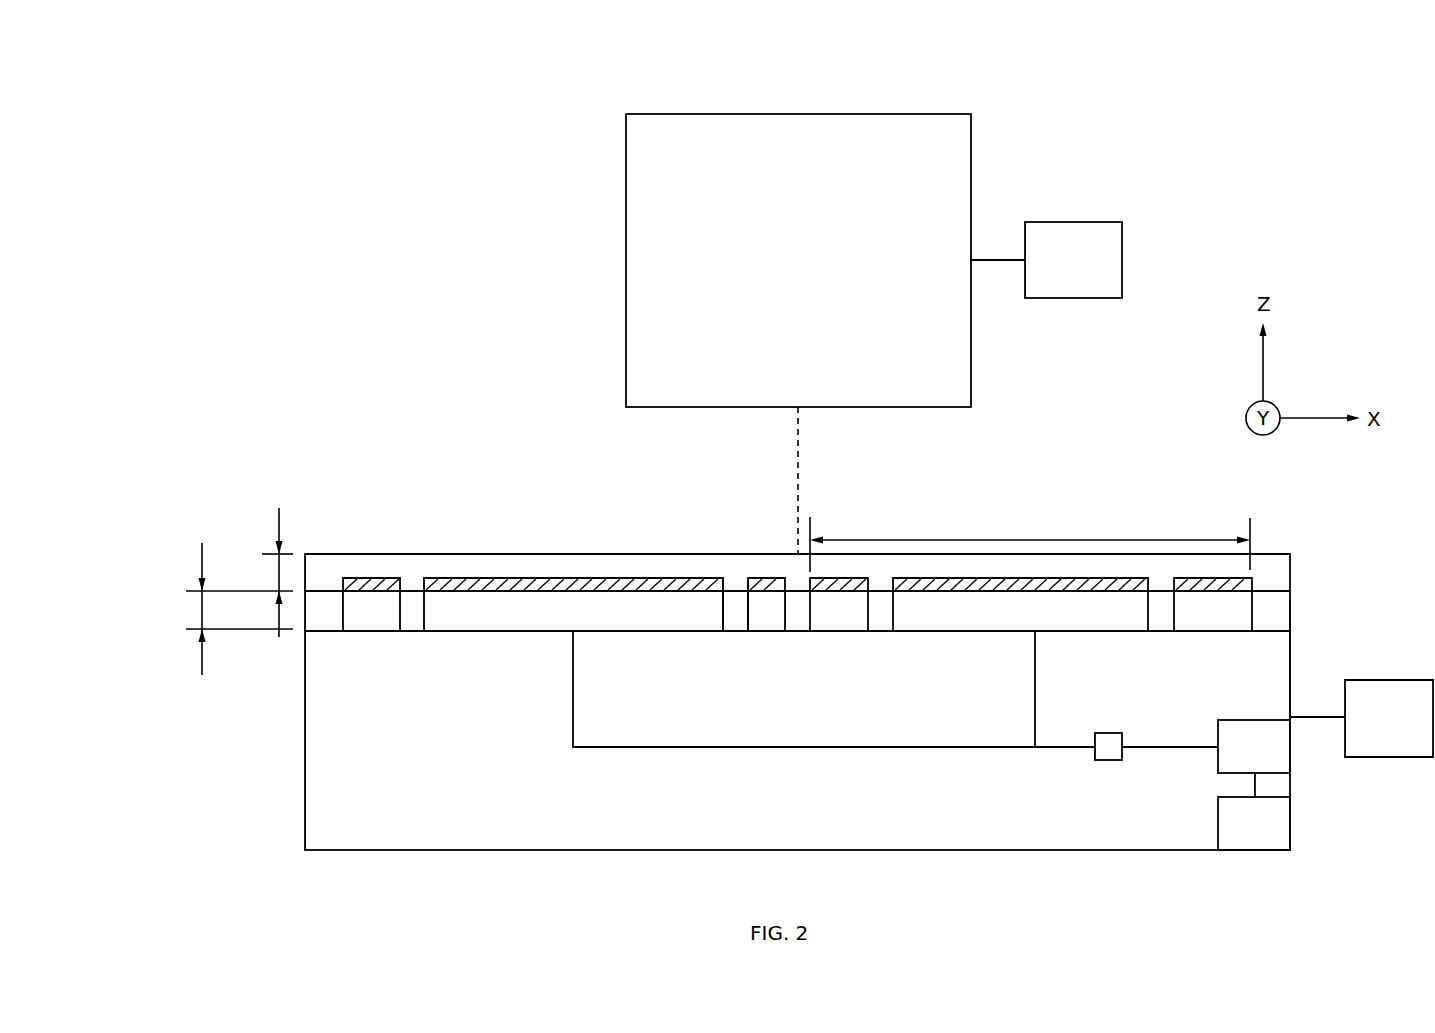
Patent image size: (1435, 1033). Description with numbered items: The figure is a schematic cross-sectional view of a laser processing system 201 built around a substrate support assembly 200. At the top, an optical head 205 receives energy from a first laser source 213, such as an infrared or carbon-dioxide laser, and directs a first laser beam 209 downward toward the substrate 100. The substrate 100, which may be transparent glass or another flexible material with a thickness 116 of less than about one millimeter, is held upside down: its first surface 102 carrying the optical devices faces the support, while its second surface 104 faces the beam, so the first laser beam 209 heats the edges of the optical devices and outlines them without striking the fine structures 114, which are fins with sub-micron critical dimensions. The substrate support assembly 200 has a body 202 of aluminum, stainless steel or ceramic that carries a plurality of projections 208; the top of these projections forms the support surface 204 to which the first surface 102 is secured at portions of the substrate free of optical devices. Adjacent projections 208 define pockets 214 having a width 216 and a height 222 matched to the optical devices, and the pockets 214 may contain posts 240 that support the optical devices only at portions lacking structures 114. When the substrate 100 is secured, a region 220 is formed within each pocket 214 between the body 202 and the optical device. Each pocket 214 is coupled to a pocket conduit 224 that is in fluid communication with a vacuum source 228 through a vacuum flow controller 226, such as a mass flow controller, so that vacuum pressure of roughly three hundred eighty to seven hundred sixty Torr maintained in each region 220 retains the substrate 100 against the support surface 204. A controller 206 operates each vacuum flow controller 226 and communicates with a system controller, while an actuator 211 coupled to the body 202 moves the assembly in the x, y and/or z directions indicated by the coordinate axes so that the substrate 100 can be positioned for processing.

The substrate 100 is at (1291, 553).
The first surface 102 is at (1285, 582).
The second surface 104 is at (1275, 530).
The structures 114 is at (952, 585).
The thickness 116 is at (277, 570).
The substrate support assembly 200 is at (1299, 868).
The system 201 is at (1156, 80).
The body 202 is at (1290, 632).
The support surface 204 is at (333, 612).
The optical head 205 is at (971, 150).
The controller 206 is at (1274, 836).
The projections 208 is at (325, 587).
The first laser beam 209 is at (798, 453).
The actuator 211 is at (1409, 731).
The first laser source 213 is at (1092, 273).
The pockets 214 is at (588, 620).
The width 216 is at (1048, 540).
The regions 220 is at (648, 615).
The height 222 is at (200, 613).
The pocket conduit 224 is at (573, 708).
The vacuum flow controller 226 is at (1118, 733).
The vacuum source 228 is at (1274, 759).
The posts 240 is at (723, 607).